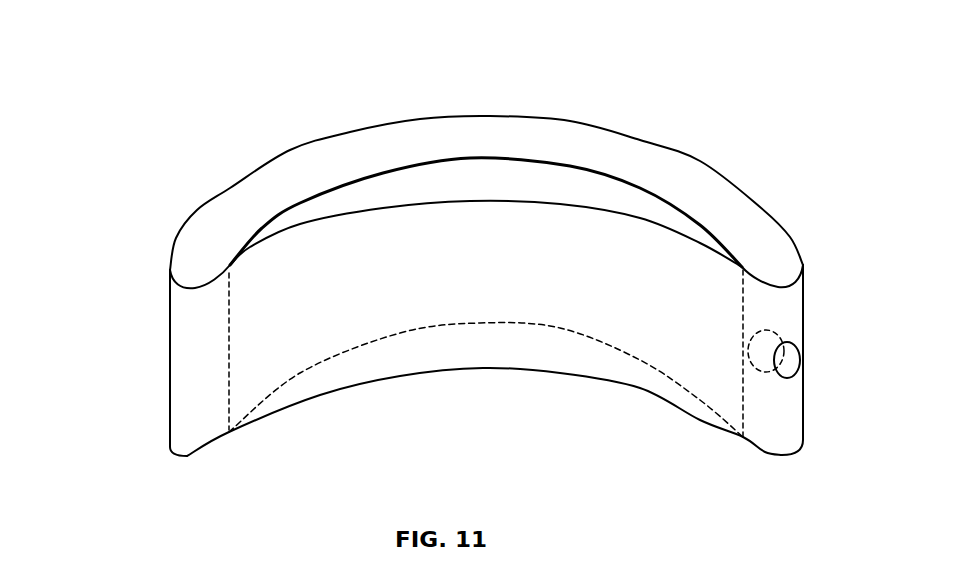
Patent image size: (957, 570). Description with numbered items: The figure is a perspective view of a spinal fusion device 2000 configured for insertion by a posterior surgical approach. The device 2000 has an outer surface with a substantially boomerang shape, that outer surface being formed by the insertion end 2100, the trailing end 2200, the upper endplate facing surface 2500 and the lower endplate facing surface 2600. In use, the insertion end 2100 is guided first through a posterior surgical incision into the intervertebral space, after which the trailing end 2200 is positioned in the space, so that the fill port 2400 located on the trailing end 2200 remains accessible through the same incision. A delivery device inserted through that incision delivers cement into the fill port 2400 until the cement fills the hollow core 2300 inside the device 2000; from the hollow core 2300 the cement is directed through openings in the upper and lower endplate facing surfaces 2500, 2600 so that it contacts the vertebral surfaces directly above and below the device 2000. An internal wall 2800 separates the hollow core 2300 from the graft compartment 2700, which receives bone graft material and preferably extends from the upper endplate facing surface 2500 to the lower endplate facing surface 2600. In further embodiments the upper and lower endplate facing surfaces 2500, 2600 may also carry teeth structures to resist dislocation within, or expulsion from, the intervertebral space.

The spinal fusion device 2000 is at (137, 74).
The insertion end 2100 is at (139, 385).
The trailing end 2200 is at (804, 392).
The hollow core 2300 is at (681, 185).
The fill port 2400 is at (787, 360).
The upper endplate facing surface 2500 is at (544, 107).
The lower endplate facing surface 2600 is at (427, 398).
The graft compartment 2700 is at (436, 185).
The internal wall 2800 is at (308, 202).